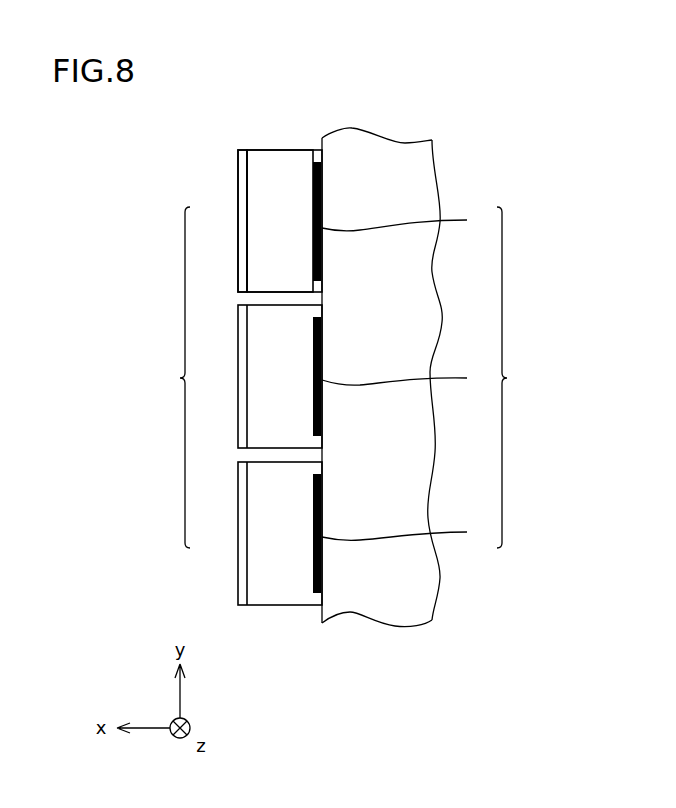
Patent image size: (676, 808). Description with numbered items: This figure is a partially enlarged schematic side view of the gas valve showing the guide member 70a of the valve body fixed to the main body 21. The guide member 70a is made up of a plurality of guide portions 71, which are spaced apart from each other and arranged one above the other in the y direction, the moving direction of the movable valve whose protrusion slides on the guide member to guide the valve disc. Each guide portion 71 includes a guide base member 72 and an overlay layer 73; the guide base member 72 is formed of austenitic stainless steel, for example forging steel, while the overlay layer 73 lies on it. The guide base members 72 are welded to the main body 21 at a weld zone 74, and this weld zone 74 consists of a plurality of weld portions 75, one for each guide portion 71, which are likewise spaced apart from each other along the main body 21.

The main body 21 is at (370, 160).
The guide member 70a is at (164, 377).
The guide portions 71 is at (232, 150).
The guide base member 72 is at (285, 150).
The overlay layer 73 is at (244, 150).
The weld zone 74 is at (518, 377).
The weld portions 75 is at (408, 377).